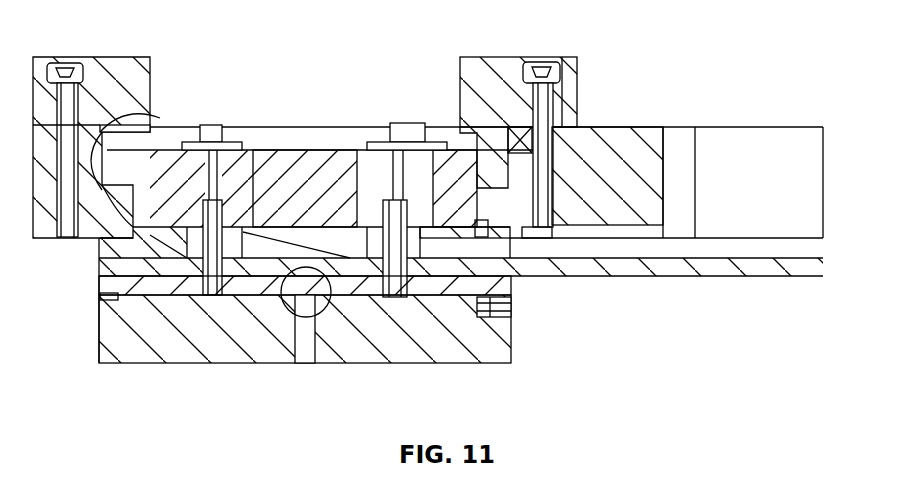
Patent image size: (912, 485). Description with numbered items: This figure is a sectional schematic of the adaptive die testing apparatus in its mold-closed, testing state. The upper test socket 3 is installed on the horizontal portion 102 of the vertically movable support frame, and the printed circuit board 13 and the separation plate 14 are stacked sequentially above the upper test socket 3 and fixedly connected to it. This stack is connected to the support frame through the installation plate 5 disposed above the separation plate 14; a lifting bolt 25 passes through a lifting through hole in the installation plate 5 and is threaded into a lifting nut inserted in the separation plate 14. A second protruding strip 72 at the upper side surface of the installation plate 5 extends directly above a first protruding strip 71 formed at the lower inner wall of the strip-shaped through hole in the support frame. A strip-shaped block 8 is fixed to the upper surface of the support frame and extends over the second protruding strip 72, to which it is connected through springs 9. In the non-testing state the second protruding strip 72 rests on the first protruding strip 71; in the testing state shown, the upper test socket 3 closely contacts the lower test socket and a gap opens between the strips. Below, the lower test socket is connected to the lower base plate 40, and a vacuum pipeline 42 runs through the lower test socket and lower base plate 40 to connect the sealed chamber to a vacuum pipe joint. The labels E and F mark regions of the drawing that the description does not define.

The strip-shaped block 8 is at (118, 70).
The curved engagement portion E is at (163, 113).
The installation plate 5 is at (323, 160).
The lifting bolt 25 is at (412, 133).
The spring 9 is at (480, 140).
The second protruding strip 72 is at (550, 103).
The horizontal portion 102 is at (747, 163).
The separation plate 14 is at (100, 257).
The first protruding strip 71 is at (513, 247).
The printed circuit board 13 is at (100, 305).
The lower base plate 40 is at (120, 357).
The vacuum pipeline 42 is at (307, 343).
The circular feature F is at (283, 303).
The upper test socket 3 is at (513, 336).